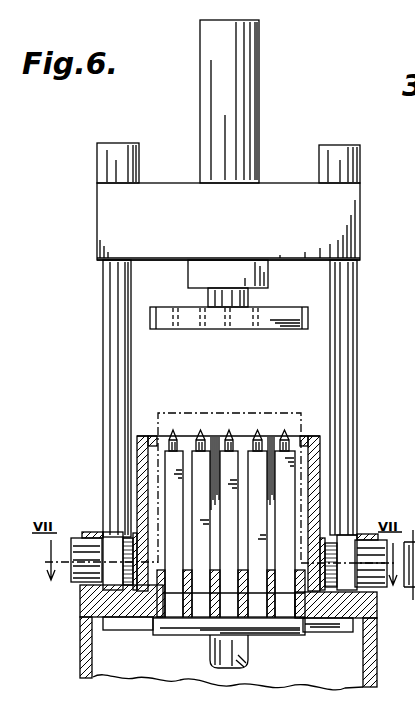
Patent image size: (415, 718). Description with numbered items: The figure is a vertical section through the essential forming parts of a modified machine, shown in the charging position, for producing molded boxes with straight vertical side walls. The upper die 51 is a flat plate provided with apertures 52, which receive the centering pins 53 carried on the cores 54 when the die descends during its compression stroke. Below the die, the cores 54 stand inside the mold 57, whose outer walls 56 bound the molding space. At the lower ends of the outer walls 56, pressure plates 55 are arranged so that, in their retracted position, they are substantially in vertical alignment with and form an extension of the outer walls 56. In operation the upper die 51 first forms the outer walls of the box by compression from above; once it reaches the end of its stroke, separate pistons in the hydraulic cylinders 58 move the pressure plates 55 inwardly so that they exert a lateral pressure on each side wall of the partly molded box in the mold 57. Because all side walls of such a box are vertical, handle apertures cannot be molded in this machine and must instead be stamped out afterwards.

The upper die 51 is at (218, 330).
The apertures 52 is at (246, 350).
The centering pins 53 is at (283, 437).
The cores 54 is at (168, 465).
The pressure plates 55 is at (138, 545).
The outer walls 56 is at (142, 487).
The mold 57 is at (188, 438).
The hydraulic cylinders 58 is at (78, 582).